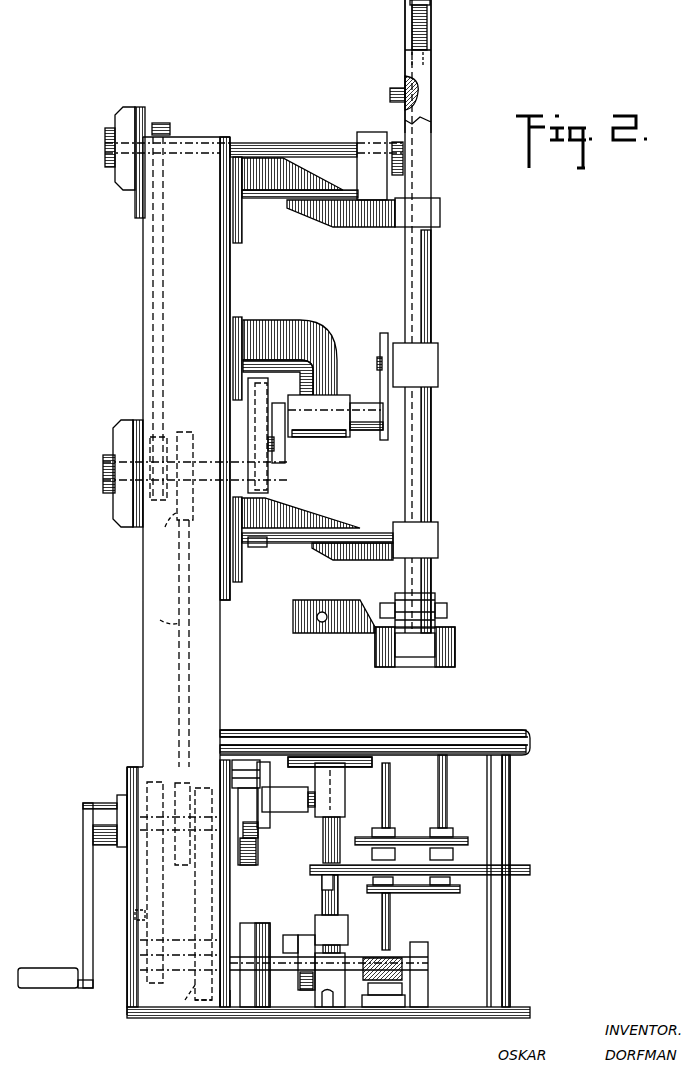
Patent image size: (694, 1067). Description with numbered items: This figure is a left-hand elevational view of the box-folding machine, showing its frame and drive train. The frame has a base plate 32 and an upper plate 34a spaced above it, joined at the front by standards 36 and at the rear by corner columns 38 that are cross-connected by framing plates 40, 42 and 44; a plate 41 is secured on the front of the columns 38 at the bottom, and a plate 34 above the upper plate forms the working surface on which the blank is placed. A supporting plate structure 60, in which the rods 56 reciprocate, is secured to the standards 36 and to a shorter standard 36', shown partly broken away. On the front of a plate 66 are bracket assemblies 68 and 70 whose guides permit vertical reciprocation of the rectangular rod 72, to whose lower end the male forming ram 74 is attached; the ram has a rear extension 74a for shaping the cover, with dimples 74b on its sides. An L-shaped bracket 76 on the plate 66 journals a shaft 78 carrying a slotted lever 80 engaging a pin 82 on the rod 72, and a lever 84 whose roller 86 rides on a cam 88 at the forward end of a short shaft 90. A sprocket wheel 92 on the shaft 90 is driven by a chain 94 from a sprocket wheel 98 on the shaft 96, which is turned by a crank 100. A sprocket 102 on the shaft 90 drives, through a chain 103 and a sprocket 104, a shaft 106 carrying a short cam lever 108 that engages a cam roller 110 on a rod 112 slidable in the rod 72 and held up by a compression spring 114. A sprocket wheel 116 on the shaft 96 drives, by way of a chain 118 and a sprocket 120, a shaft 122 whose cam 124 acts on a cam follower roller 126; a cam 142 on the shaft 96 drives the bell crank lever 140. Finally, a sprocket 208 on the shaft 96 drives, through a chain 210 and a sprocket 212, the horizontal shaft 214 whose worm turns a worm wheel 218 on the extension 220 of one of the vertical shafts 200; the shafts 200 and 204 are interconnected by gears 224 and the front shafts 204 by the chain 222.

The base plate 32 is at (328, 1012).
The plate 34 is at (520, 731).
The upper plate 34a is at (532, 752).
The standards 36 is at (515, 881).
The shorter standard 36' is at (305, 967).
The corner columns 38 is at (143, 677).
The framing plate 40 is at (130, 1002).
The plate 41 is at (225, 1000).
The framing plate 42 is at (120, 528).
The framing plate 44 is at (133, 213).
The vertically slidable rods 56 is at (323, 839).
The supporting plate structure 60 is at (530, 871).
The plate 66 is at (230, 598).
The bracket assembly 68 is at (320, 218).
The bracket assembly 70 is at (343, 540).
The rectangular rod 72 is at (425, 295).
The male forming ram 74 is at (460, 654).
The rectangular rear extension 74a is at (330, 634).
The dimples 74b is at (325, 613).
The L-shaped bracket 76 is at (333, 437).
The shaft 78 is at (335, 405).
The lever 80 is at (384, 333).
The pin 82 is at (377, 360).
The lever 84 is at (280, 463).
The cam follower roller 86 is at (285, 448).
The cam 88 is at (262, 547).
The short shaft 90 is at (208, 462).
The sprocket wheel 92 is at (165, 531).
The chain 94 is at (166, 614).
The shaft 96 is at (210, 785).
The sprocket wheel 98 is at (175, 780).
The crank 100 is at (83, 895).
The sprocket 102 is at (150, 420).
The chain 103 is at (152, 303).
The sprocket 104 is at (168, 128).
The shaft 106 is at (268, 143).
The short cam lever 108 is at (405, 163).
The cam roller 110 is at (390, 95).
The rod 112 is at (405, 33).
The compression spring 114 is at (428, 30).
The sprocket wheel 116 is at (150, 790).
The crank shaft 118 is at (148, 893).
The sprocket 120 is at (135, 915).
The shaft 122 is at (183, 940).
The cam 124 is at (297, 988).
The cam follower roller 126 is at (302, 925).
The bell crank lever 140 is at (288, 810).
The cam 142 is at (250, 866).
The vertical shafts 200 is at (388, 785).
The vertical shafts 204 is at (428, 811).
The sprocket 208 is at (179, 857).
The chain 210 is at (230, 912).
The sprocket 212 is at (184, 1013).
The horizontal shaft 214 is at (358, 975).
The worm wheel 218 is at (430, 966).
The extension 220 is at (392, 930).
The chain 222 is at (425, 891).
The gears 224 is at (462, 835).